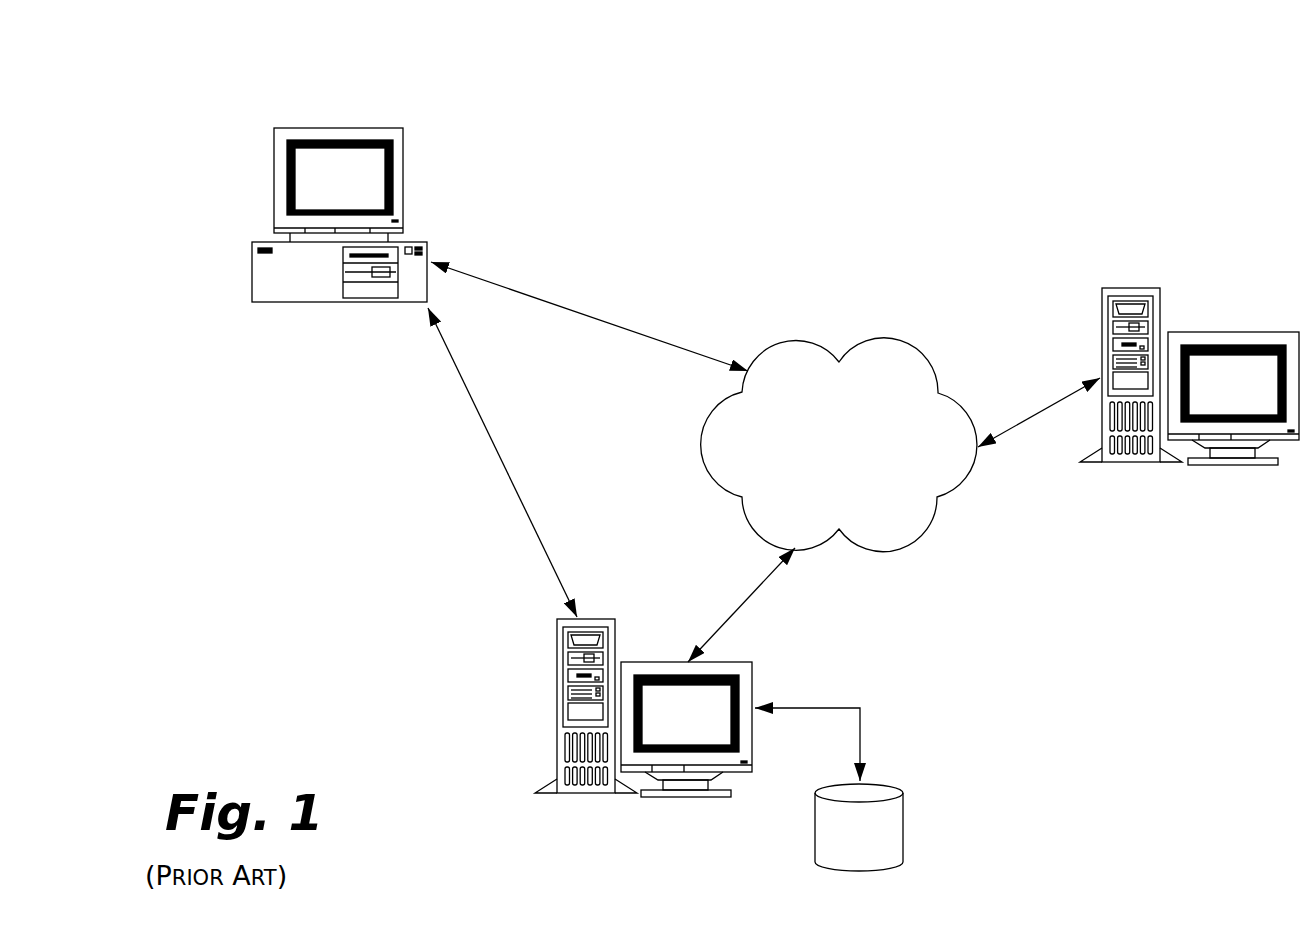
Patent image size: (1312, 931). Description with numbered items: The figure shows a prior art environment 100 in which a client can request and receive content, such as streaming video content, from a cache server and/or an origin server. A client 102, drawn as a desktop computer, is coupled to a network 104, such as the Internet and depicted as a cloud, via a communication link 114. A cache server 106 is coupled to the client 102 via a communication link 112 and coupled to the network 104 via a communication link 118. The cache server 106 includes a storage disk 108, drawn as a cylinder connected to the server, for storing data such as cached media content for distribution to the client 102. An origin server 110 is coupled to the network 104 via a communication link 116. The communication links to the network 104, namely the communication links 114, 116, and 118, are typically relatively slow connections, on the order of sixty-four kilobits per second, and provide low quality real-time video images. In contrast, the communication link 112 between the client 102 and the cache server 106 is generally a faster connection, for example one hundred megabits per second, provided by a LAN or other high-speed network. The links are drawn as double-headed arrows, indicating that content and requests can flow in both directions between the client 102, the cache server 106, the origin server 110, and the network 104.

The environment 100 is at (582, 72).
The client 102 is at (252, 258).
The network 104 is at (857, 484).
The cache server 106 is at (557, 705).
The storage disk 108 is at (903, 825).
The origin server 110 is at (1125, 288).
The communication link 112 is at (500, 458).
The communication link 114 is at (605, 318).
The communication link 116 is at (1060, 393).
The communication link 118 is at (752, 593).